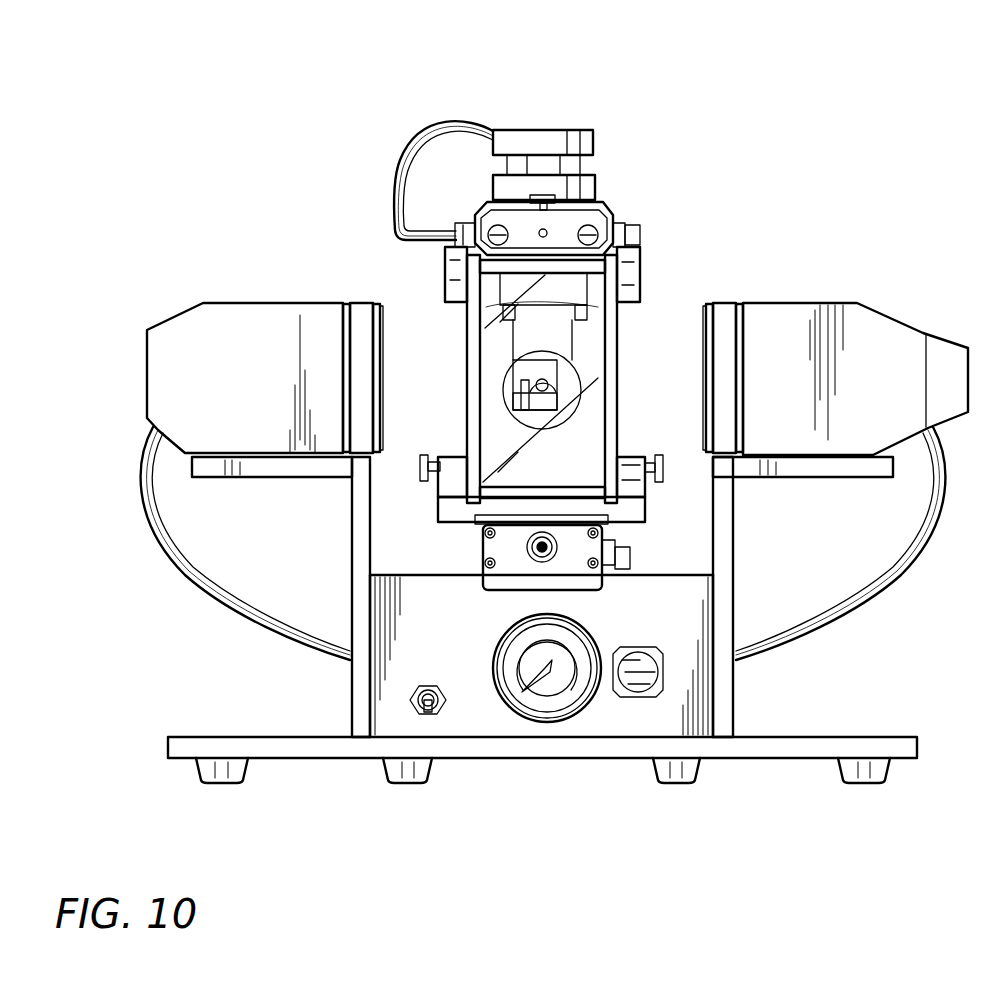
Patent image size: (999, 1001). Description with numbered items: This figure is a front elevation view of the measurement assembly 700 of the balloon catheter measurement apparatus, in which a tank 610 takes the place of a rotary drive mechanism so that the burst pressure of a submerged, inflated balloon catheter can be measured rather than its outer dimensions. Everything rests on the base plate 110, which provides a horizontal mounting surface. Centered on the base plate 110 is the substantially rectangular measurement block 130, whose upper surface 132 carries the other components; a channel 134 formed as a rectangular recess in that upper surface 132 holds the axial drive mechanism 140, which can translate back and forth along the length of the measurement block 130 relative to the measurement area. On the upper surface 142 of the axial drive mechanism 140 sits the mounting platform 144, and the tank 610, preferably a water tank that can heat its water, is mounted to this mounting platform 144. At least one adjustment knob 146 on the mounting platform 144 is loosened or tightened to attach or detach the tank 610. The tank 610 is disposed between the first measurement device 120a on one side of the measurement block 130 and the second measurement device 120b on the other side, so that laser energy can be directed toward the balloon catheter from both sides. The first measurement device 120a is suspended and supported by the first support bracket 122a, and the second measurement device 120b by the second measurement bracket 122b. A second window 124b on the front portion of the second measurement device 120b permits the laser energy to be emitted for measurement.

The measurement assembly 700 is at (652, 122).
The tank 610 is at (602, 345).
The base plate 110 is at (900, 743).
The first measurement device 120a is at (195, 325).
The second measurement device 120b is at (868, 335).
The first support bracket 122a is at (295, 470).
The second measurement bracket 122b is at (830, 472).
The second window 124b is at (378, 303).
The measurement block 130 is at (475, 702).
The upper surface 132 is at (422, 575).
The channel 134 is at (503, 588).
The axial drive mechanism 140 is at (568, 573).
The upper surface 142 is at (607, 527).
The mounting platform 144 is at (648, 487).
The adjustment knob 146 is at (667, 470).